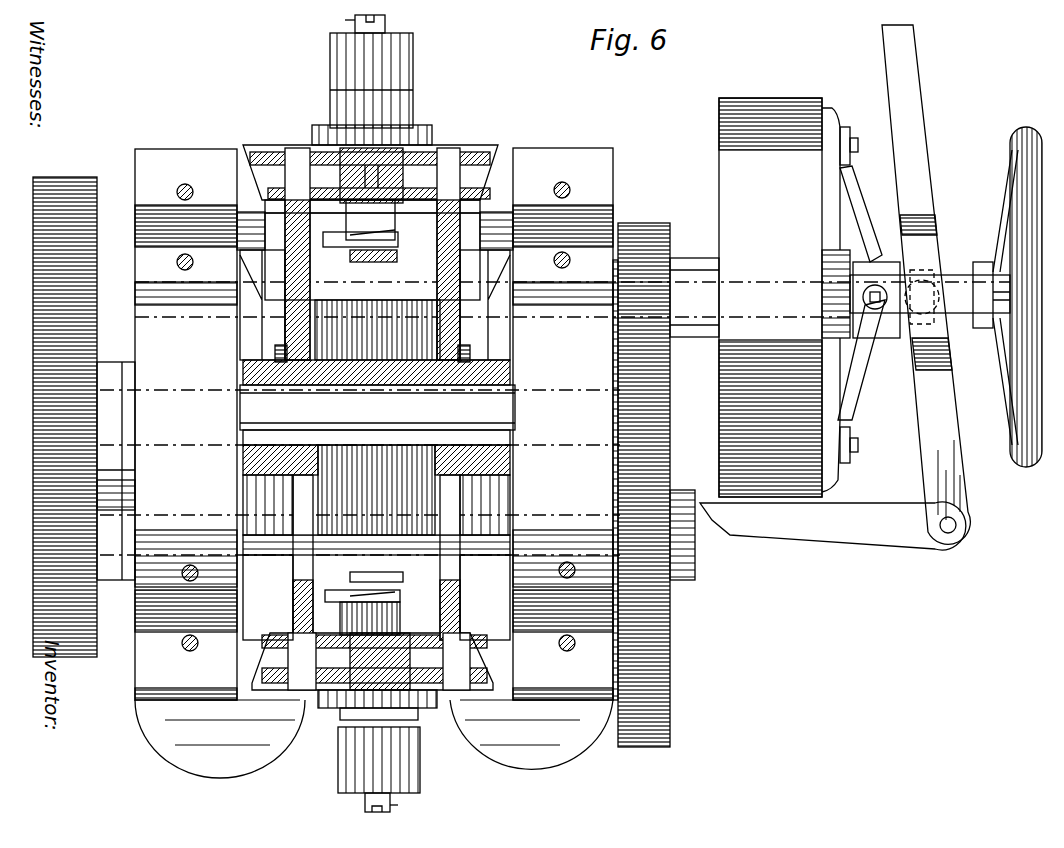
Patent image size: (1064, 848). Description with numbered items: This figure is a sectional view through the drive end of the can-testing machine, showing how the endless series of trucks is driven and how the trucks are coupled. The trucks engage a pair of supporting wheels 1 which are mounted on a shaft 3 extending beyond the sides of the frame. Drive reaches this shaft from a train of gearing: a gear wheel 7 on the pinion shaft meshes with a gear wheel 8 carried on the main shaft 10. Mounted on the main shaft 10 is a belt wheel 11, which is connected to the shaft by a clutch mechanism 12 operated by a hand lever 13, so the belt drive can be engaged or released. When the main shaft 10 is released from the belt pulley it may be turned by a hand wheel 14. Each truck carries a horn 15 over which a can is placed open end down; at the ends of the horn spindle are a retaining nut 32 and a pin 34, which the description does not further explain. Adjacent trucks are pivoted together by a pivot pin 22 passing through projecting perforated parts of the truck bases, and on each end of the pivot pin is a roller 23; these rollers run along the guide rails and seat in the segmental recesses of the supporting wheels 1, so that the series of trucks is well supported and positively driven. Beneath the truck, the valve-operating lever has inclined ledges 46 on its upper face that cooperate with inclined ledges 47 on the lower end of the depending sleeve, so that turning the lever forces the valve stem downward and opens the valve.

The supporting wheel 1 is at (310, 348).
The shaft 3 is at (405, 437).
The gear wheel 7 is at (655, 605).
The gear wheel 8 is at (649, 475).
The main shaft 10 is at (712, 277).
The belt wheel 11 is at (782, 98).
The clutch mechanism 12 is at (848, 207).
The hand lever 13 is at (915, 135).
The hand wheel 14 is at (1020, 165).
The horn 15 is at (413, 76).
The pivot pin 22 is at (440, 152).
The roller 23 is at (296, 158).
The nut 32 is at (386, 22).
The pin 34 is at (352, 19).
The inclined ledge 46 is at (368, 265).
The inclined ledge 47 is at (365, 238).